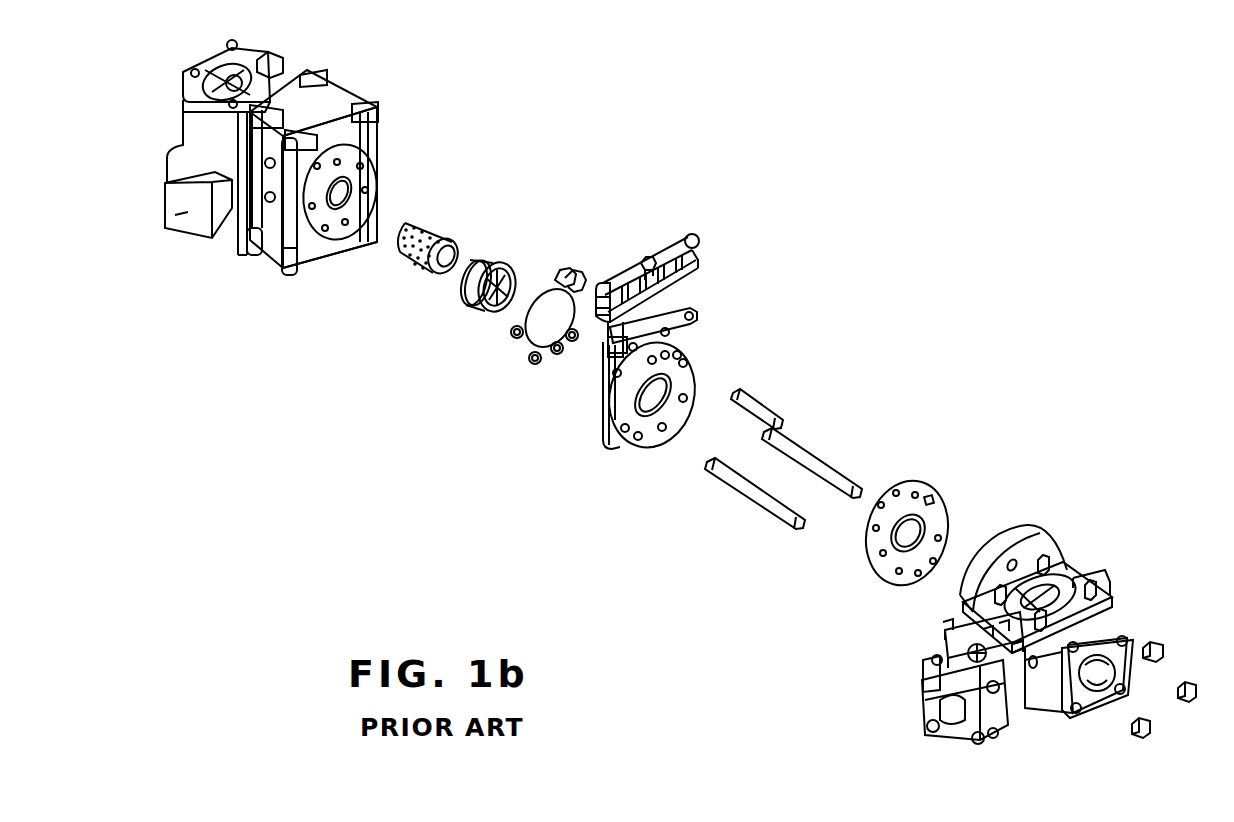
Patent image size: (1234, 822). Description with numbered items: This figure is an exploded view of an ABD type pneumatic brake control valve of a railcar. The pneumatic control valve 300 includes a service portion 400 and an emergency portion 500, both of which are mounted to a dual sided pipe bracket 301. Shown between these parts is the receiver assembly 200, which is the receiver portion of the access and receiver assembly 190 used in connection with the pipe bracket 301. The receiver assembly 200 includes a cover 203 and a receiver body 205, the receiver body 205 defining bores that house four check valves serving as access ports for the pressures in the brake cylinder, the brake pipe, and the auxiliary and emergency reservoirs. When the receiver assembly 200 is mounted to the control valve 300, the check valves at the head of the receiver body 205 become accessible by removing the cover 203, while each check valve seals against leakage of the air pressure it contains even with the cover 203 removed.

The emergency portion 500 is at (182, 128).
The pipe bracket 301 is at (319, 262).
The receiver assembly 200 is at (720, 251).
The cover 203 is at (675, 247).
The receiver body 205 is at (687, 286).
The access and receiver assembly 190 is at (592, 431).
The pneumatic control valve 300 is at (890, 317).
The service portion 400 is at (1085, 580).